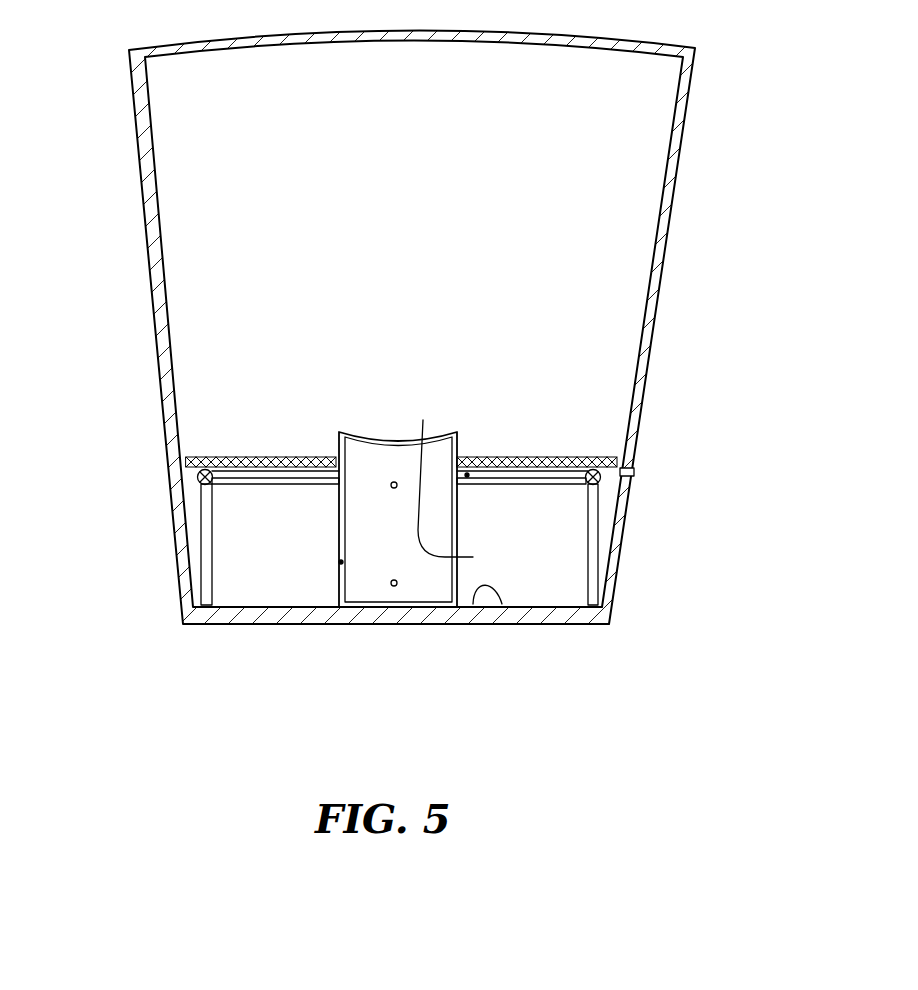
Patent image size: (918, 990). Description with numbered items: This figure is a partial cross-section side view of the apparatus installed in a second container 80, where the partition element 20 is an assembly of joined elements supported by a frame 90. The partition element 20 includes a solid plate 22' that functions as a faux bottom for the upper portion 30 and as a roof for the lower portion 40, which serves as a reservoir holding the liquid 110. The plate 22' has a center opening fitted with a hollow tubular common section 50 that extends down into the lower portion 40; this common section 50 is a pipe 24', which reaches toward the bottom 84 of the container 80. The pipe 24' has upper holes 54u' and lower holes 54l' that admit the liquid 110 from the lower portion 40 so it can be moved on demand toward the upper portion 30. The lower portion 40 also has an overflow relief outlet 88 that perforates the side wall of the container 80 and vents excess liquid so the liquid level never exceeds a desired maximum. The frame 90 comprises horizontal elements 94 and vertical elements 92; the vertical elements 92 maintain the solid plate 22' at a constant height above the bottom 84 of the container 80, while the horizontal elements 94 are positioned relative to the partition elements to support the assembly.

The container 80 is at (668, 310).
The upper portion 30 is at (411, 259).
The lower portion 40 is at (542, 543).
The hollow tubular common section 50 is at (400, 538).
The overflow relief outlet 88 is at (633, 472).
The frame 90 is at (607, 498).
The vertical elements 92 is at (595, 572).
The bottom 84 is at (474, 604).
The horizontal elements 94 is at (467, 475).
The liquid 110 is at (423, 450).
The upper holes 54u' is at (229, 499).
The lower holes 54l' is at (282, 628).
The pipe 24' is at (222, 570).
The partition element 20 is at (297, 427).
The solid plate 22' is at (187, 436).